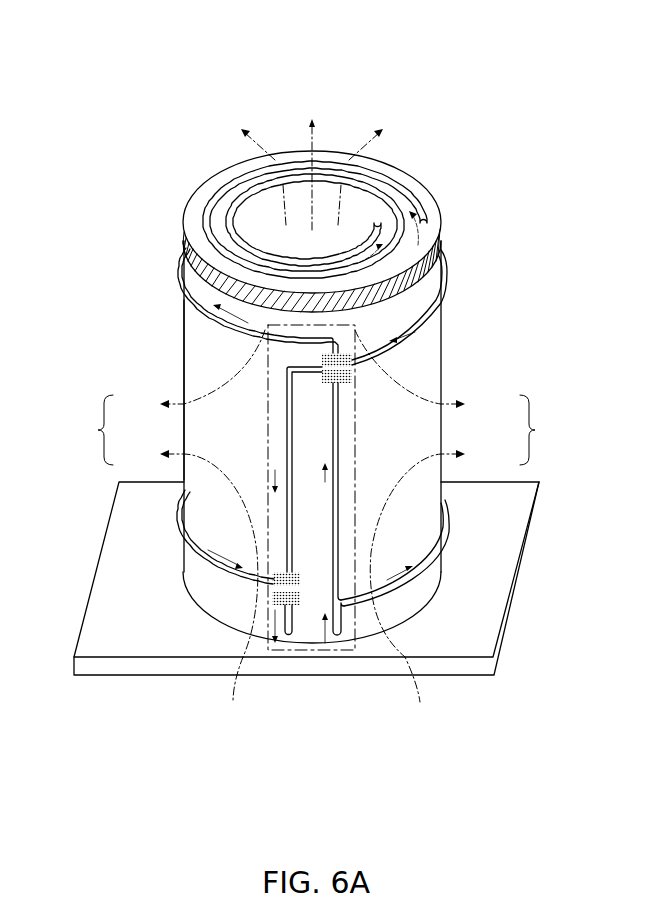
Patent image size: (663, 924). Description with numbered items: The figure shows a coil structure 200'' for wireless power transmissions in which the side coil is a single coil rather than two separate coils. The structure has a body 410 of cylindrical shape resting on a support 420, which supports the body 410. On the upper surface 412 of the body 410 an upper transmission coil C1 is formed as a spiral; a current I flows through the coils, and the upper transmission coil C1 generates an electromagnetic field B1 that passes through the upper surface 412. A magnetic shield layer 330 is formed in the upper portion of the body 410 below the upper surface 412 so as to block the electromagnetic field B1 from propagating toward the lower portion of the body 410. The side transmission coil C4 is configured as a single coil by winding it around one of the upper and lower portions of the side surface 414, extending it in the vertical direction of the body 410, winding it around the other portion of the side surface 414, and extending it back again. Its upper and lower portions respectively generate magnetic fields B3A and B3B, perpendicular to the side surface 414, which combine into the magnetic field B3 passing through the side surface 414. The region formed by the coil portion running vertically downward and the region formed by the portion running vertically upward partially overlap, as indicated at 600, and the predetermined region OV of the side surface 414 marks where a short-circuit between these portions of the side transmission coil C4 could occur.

The coil structure 200'' is at (319, 23).
The body 410 is at (194, 381).
The upper surface 412 is at (197, 208).
The side surface 414 is at (184, 392).
The support 420 is at (498, 582).
The magnetic shield layer 330 is at (443, 270).
The overlap region 600 is at (270, 618).
The upper transmission coil C1 is at (407, 182).
The side transmission coil C4 is at (385, 353).
The predetermined region OV is at (350, 355).
The current I is at (228, 321).
The electromagnetic field B1 is at (312, 157).
The magnetic field B3 is at (320, 430).
The magnetic field B3A is at (317, 376).
The magnetic field B3B is at (317, 573).